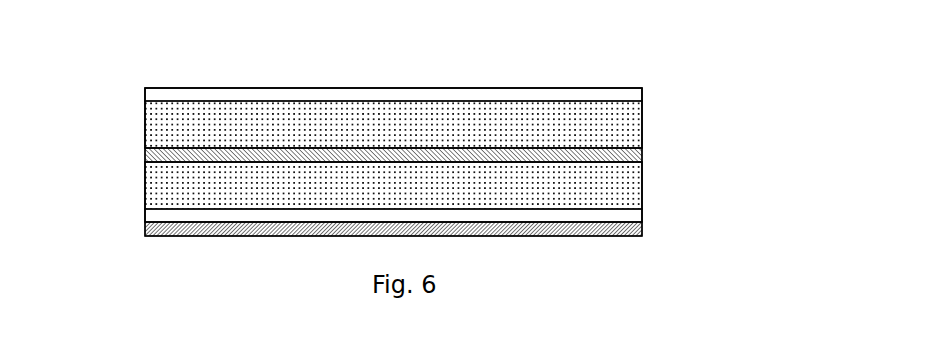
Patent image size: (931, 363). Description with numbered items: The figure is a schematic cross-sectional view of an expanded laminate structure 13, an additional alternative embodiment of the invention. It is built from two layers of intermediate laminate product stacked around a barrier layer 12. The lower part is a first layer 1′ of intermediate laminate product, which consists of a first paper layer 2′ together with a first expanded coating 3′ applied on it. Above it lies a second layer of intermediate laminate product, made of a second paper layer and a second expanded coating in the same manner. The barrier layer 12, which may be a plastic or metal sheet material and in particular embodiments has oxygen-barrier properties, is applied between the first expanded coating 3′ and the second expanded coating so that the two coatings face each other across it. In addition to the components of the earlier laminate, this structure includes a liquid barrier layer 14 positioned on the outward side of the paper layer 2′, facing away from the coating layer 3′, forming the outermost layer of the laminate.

The expanded laminate structure 13 is at (125, 55).
The first layer of intermediate laminate product 1′ is at (137, 161).
The barrier layer 12 is at (643, 153).
The first expanded coating 3′ is at (625, 187).
The first paper layer 2′ is at (625, 215).
The liquid barrier layer 14 is at (643, 236).